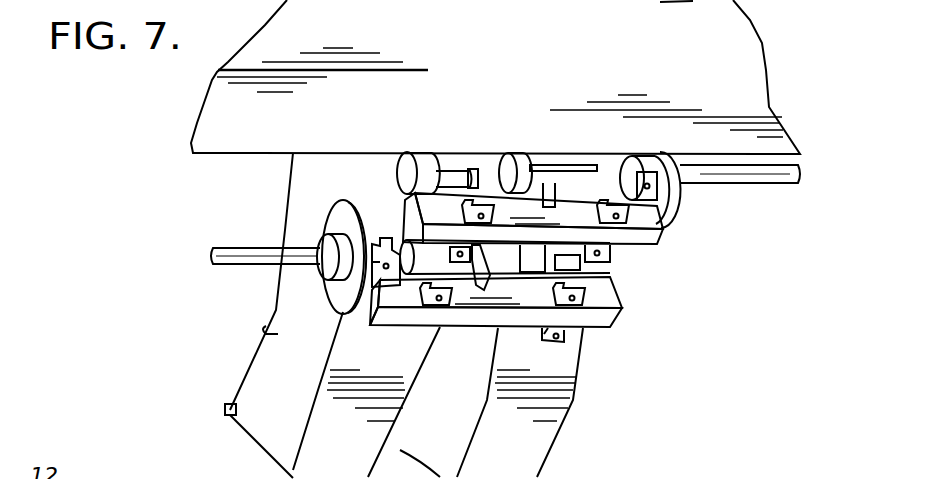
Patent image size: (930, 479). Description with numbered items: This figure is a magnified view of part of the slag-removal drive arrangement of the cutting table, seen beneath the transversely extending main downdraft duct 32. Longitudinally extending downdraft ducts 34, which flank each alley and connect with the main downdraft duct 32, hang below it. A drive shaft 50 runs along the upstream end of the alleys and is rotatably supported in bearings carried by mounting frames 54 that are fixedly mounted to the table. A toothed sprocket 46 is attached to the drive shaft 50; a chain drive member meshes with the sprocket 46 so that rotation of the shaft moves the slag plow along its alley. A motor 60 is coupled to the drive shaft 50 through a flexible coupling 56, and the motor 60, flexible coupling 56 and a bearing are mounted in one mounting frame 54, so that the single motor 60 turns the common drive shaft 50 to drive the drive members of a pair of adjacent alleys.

The main downdraft duct 32 is at (517, 61).
The downdraft duct 34 is at (282, 364).
The sprocket 46 is at (328, 213).
The drive shaft 50 is at (248, 263).
The mounting frame 54 is at (647, 232).
The flexible coupling 56 is at (377, 198).
The motor 60 is at (458, 158).